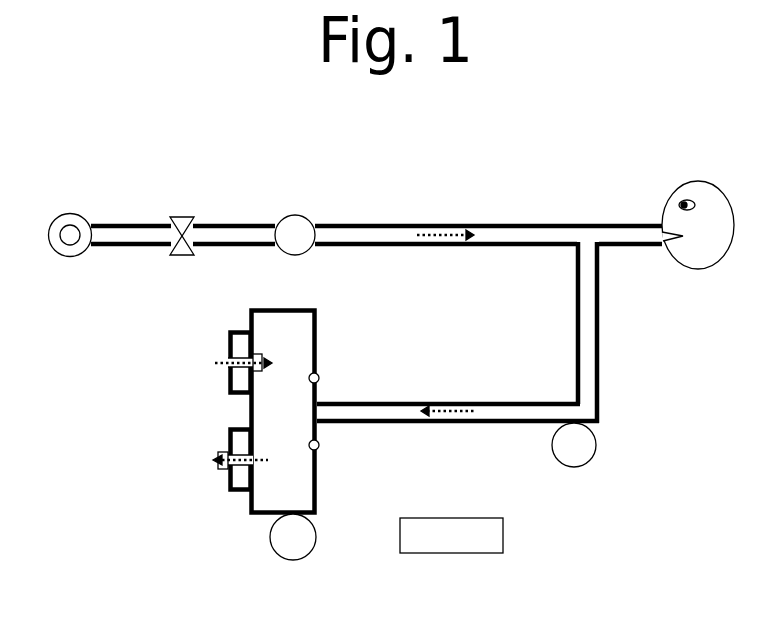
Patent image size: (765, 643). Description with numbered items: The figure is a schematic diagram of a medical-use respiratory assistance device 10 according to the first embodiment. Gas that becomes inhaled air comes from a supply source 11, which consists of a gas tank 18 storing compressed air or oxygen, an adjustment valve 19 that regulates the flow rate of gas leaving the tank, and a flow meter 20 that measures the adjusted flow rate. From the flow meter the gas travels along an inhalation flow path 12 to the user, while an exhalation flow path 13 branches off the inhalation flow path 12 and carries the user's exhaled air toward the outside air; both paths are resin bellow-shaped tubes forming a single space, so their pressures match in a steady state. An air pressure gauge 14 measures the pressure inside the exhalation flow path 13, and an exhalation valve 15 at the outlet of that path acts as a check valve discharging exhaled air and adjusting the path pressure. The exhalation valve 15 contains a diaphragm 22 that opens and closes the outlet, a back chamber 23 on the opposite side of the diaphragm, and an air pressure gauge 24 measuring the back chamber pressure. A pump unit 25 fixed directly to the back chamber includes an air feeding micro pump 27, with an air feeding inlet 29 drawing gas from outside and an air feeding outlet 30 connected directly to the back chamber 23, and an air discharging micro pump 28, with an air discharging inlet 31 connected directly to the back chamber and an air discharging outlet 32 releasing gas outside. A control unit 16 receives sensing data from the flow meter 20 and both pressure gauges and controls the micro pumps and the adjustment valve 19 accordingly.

The respiratory assistance device 10 is at (624, 160).
The supply source 11 is at (236, 186).
The inhalation flow path 12 is at (537, 224).
The exhalation flow path 13 is at (536, 402).
The air pressure gauge 14 is at (574, 467).
The exhalation valve 15 is at (306, 306).
The control unit 16 is at (450, 518).
The gas tank 18 is at (71, 213).
The adjustment valve 19 is at (181, 216).
The flow meter 20 is at (295, 215).
The diaphragm 22 is at (320, 432).
The back chamber 23 is at (320, 478).
The air pressure gauge 24 is at (293, 560).
The pump unit 25 is at (240, 405).
The air feeding micro pump 27 is at (239, 330).
The air discharging micro pump 28 is at (240, 493).
The air feeding inlet 29 is at (228, 360).
The air feeding outlet 30 is at (266, 370).
The air discharging inlet 31 is at (264, 467).
The air discharging outlet 32 is at (216, 455).